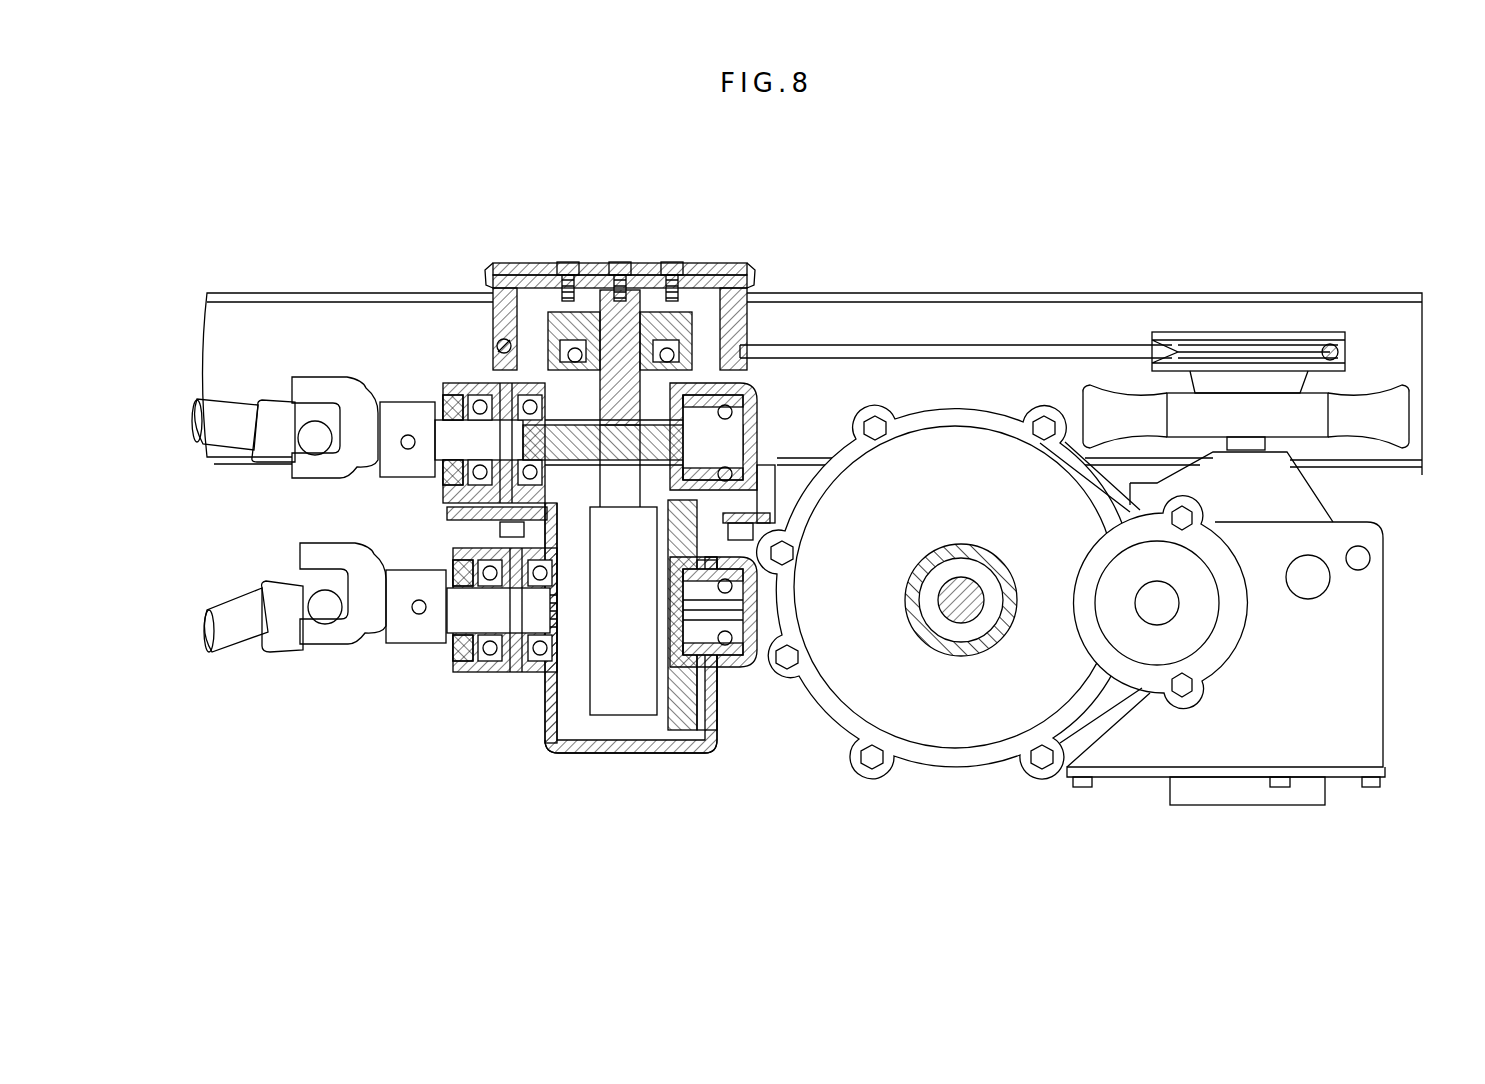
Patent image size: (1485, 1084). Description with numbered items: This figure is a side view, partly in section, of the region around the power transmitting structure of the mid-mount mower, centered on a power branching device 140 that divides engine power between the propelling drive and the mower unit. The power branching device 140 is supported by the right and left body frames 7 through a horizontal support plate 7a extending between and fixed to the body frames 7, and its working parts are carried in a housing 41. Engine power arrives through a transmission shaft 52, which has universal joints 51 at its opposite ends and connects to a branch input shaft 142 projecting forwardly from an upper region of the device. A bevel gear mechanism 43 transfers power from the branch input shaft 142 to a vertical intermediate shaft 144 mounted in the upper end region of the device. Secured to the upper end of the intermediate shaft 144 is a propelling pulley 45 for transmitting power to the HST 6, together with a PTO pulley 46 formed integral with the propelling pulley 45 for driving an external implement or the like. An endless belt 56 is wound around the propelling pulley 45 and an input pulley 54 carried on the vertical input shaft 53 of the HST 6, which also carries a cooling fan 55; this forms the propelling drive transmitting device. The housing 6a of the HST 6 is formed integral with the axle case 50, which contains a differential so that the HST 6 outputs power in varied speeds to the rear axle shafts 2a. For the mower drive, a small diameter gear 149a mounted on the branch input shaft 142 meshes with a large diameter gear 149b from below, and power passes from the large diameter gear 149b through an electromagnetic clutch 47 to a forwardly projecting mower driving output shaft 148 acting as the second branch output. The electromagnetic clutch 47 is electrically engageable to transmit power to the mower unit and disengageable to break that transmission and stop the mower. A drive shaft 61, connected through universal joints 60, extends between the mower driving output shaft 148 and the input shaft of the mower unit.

The body frames 7 is at (262, 293).
The PTO pulley 46 is at (497, 282).
The propelling pulley 45 is at (496, 344).
The transmission shaft 52 is at (230, 413).
The branch input shaft 142 is at (445, 437).
The small diameter gear 149a is at (760, 388).
The universal joints 51 is at (302, 500).
The horizontal support plate 7a is at (455, 522).
The vertical intermediate shaft 144 is at (598, 418).
The bevel gear mechanism 43 is at (614, 510).
The mower driving output shaft 148 is at (452, 615).
The drive shaft 61 is at (240, 645).
The universal joints 60 is at (372, 672).
The housing 41 is at (540, 706).
The power branching device 140 is at (545, 753).
The electromagnetic clutch 47 is at (618, 708).
The large diameter gear 149b is at (692, 757).
The axle case 50 is at (858, 710).
The rear axle shafts 2a is at (964, 618).
The endless belt 56 is at (1062, 345).
The input pulley 54 is at (1245, 332).
The cooling fan 55 is at (1385, 386).
The vertical input shaft 53 is at (1247, 441).
The housing 6a is at (1380, 657).
The HST 6 is at (1388, 714).